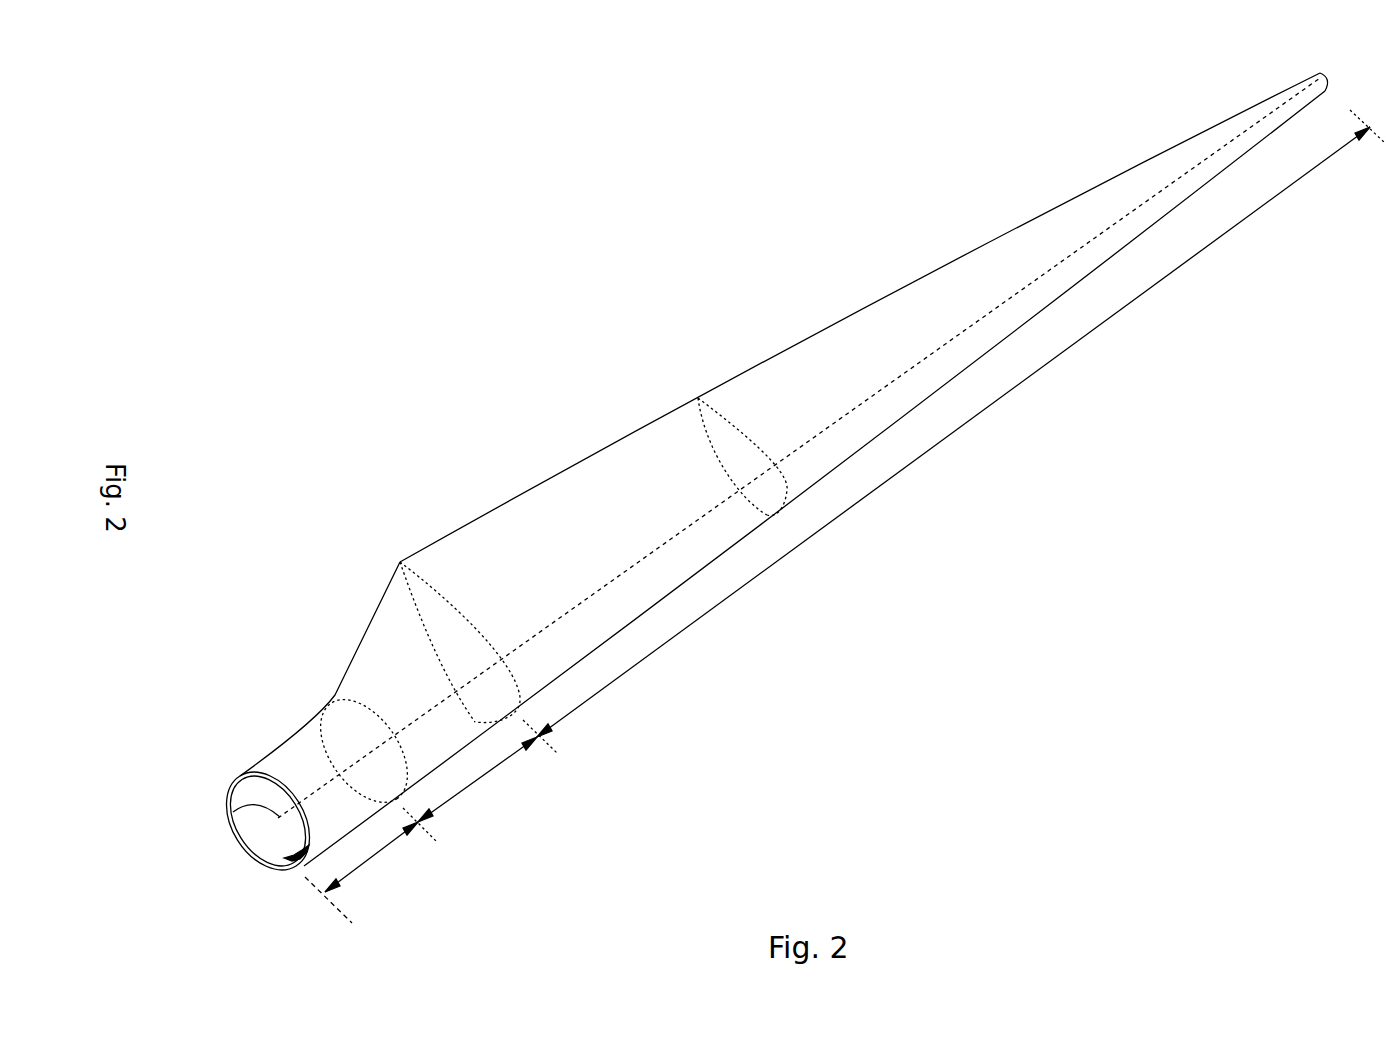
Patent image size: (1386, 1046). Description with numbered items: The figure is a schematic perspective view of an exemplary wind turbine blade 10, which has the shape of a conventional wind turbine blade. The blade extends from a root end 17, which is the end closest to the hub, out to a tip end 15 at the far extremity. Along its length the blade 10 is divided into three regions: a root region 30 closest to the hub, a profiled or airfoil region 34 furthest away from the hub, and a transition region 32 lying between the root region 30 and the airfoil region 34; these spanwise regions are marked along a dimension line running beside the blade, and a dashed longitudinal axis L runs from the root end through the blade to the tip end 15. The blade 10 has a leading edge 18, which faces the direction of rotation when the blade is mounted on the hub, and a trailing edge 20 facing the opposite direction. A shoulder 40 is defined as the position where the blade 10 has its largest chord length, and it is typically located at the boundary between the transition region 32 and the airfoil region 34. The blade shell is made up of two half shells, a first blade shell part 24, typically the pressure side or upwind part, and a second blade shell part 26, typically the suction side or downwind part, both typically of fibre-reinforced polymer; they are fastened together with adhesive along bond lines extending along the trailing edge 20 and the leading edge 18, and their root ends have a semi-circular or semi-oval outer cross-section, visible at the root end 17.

The wind turbine blade 10 is at (732, 492).
The tip end 15 is at (1323, 73).
The root end 17 is at (252, 788).
The leading edge 18 is at (990, 350).
The trailing edge 20 is at (872, 306).
The first blade shell part 24 is at (247, 780).
The second blade shell part 26 is at (260, 857).
The root region 30 is at (377, 857).
The transition region 32 is at (485, 777).
The airfoil region 34 is at (872, 493).
The shoulder 40 is at (400, 562).
The longitudinal axis L is at (280, 820).